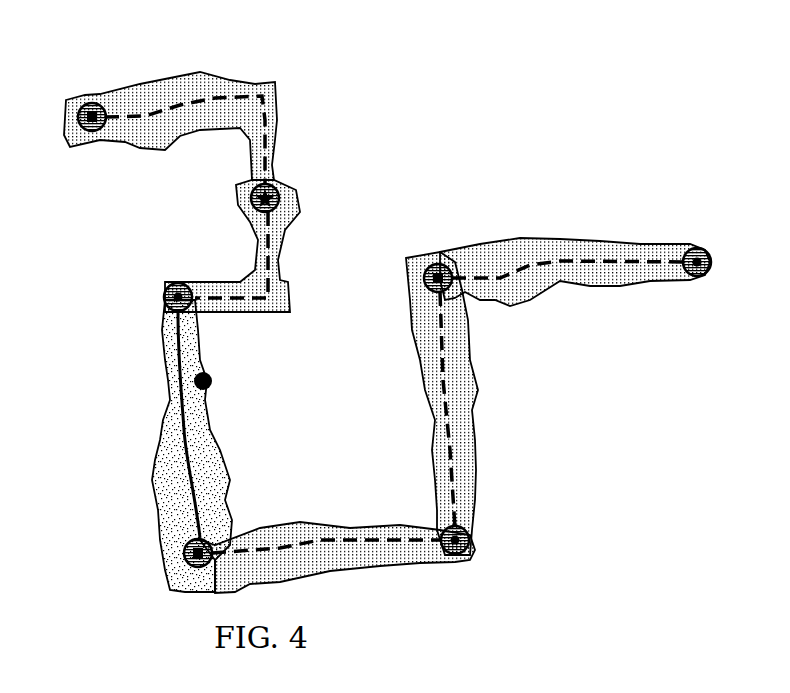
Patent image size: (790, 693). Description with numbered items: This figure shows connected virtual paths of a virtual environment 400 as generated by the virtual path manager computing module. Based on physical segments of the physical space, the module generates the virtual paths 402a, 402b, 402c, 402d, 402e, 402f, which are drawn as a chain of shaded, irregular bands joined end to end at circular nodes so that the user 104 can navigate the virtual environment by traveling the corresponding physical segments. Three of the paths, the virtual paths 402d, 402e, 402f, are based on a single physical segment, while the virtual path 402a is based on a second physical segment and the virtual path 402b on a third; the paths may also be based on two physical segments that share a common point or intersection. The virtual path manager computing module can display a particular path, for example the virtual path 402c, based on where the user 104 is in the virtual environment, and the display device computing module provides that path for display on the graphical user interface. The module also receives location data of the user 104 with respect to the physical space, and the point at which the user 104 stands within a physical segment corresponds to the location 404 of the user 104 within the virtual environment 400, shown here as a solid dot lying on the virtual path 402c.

The virtual environment 400 is at (470, 150).
The virtual path 402a is at (181, 83).
The virtual path 402b is at (229, 283).
The virtual path 402c is at (190, 446).
The virtual path 402d is at (372, 530).
The virtual path 402e is at (470, 398).
The virtual path 402f is at (622, 290).
The location 404 is at (214, 378).
The user 104 is at (226, 398).